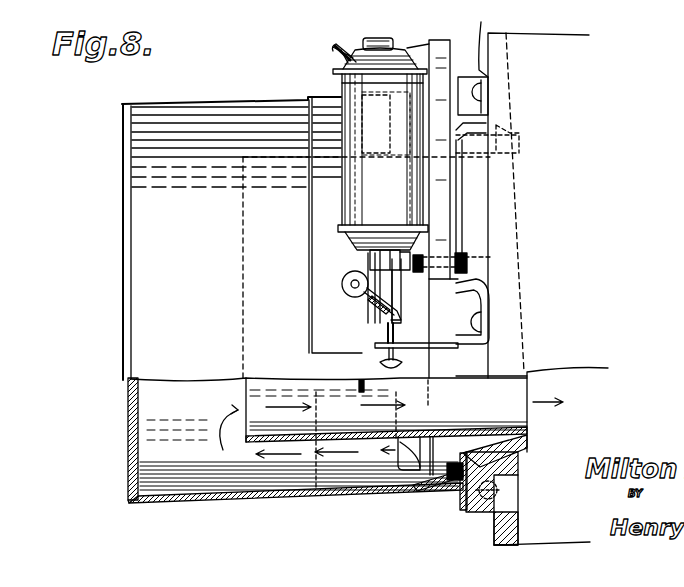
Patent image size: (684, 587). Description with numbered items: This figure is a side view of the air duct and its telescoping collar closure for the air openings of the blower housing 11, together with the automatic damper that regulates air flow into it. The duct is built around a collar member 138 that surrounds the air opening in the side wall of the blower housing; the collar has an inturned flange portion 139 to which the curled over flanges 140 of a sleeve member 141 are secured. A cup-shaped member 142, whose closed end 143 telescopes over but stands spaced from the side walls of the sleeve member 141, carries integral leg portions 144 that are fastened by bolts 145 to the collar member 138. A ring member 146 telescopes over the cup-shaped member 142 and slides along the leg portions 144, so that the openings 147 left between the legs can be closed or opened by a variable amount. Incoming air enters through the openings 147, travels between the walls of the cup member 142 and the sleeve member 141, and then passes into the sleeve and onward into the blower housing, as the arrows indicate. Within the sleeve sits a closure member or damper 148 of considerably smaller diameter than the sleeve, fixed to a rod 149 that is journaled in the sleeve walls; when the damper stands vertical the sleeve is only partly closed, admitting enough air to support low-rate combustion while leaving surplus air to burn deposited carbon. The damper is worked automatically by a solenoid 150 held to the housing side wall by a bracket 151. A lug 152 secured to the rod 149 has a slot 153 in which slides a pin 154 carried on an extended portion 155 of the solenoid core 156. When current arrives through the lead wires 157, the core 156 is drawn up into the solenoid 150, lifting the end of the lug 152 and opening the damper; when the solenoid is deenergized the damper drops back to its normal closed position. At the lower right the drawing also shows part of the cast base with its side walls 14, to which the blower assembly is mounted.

The casing 11 is at (145, 263).
The side walls 14 is at (505, 530).
The collar member 138 is at (432, 413).
The inturned flange portion 139 is at (526, 443).
The curled over flanges 140 is at (540, 452).
The sleeve member 141 is at (355, 434).
The cup-shaped member 142 is at (205, 505).
The closed end 143 is at (126, 163).
The leg portions 144 is at (425, 488).
The bolts 145 is at (455, 495).
The ring member 146 is at (322, 201).
The openings 147 is at (268, 100).
The closure member or damper 148 is at (358, 388).
The rod 149 is at (351, 284).
The solenoid 150 is at (351, 87).
The bracket 151 is at (452, 44).
The lug 152 is at (340, 288).
The slot 153 is at (362, 303).
The pin 154 is at (456, 313).
The extended portion 155 is at (490, 292).
The solenoid core 156 is at (388, 46).
The lead wires 157 is at (343, 50).